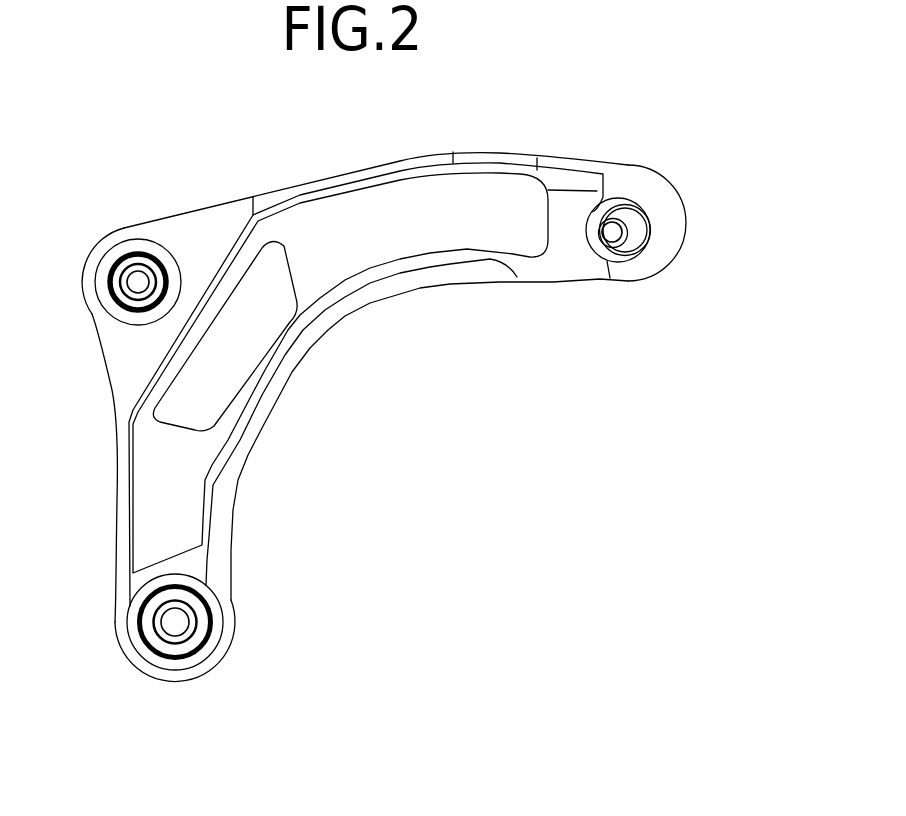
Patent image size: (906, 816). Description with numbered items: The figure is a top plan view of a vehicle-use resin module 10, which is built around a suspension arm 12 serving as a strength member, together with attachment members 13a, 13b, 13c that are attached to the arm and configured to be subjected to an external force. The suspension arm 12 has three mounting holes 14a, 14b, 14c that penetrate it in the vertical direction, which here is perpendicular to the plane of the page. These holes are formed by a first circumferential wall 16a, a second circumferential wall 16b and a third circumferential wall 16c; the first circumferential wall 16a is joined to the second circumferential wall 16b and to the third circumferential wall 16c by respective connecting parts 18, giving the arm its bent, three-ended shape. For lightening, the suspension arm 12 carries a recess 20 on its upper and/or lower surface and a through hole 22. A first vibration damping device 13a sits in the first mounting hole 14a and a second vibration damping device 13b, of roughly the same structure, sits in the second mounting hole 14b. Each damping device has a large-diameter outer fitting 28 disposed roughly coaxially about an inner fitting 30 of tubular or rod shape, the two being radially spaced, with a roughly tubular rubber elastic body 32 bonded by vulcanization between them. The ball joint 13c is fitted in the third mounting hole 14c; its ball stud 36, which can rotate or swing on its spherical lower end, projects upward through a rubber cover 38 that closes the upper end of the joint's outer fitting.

The vehicle-use resin module 10 is at (731, 151).
The suspension arm 12 is at (355, 160).
The first vibration damping device 13a is at (142, 243).
The second vibration damping device 13b is at (225, 624).
The ball joint 13c is at (625, 189).
The first mounting hole 14a is at (120, 275).
The second mounting hole 14b is at (163, 645).
The third mounting hole 14c is at (646, 238).
The first circumferential wall 16a is at (110, 237).
The second circumferential wall 16b is at (185, 678).
The third circumferential wall 16c is at (667, 223).
The connecting part 18 is at (453, 160).
The recess 20 is at (450, 255).
The through hole 22 is at (243, 368).
The outer fitting 28 is at (165, 262).
The inner fitting 30 is at (128, 288).
The rubber elastic body 32 is at (128, 300).
The ball stud 36 is at (608, 236).
The rubber cover 38 is at (618, 248).